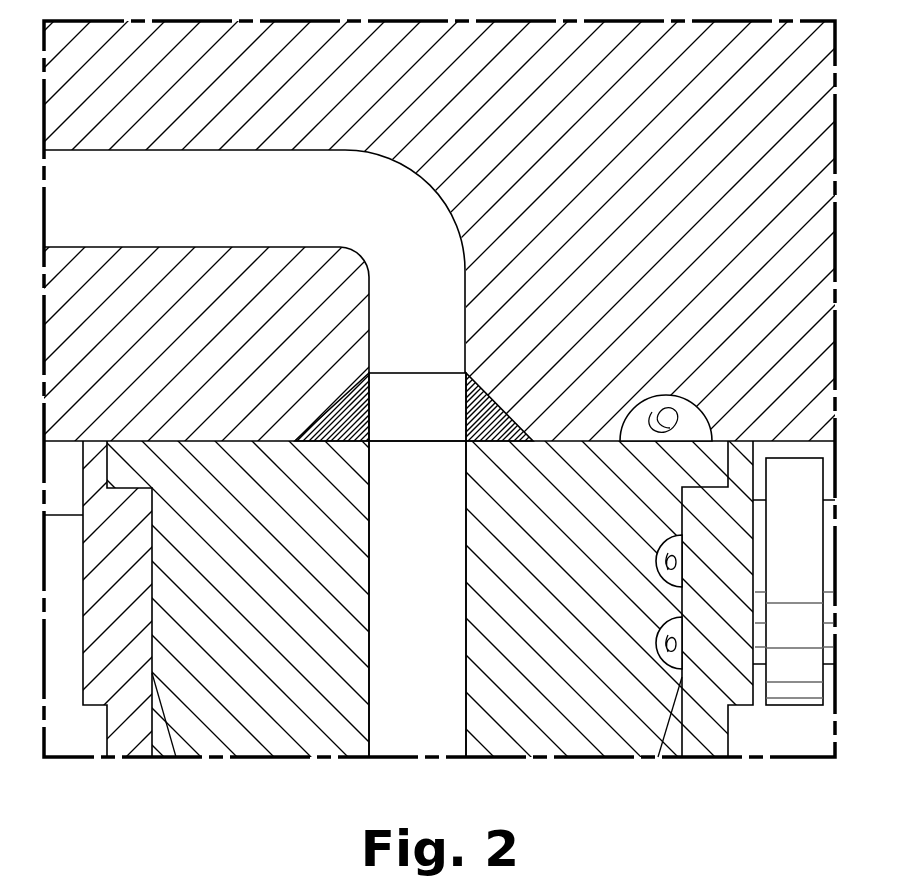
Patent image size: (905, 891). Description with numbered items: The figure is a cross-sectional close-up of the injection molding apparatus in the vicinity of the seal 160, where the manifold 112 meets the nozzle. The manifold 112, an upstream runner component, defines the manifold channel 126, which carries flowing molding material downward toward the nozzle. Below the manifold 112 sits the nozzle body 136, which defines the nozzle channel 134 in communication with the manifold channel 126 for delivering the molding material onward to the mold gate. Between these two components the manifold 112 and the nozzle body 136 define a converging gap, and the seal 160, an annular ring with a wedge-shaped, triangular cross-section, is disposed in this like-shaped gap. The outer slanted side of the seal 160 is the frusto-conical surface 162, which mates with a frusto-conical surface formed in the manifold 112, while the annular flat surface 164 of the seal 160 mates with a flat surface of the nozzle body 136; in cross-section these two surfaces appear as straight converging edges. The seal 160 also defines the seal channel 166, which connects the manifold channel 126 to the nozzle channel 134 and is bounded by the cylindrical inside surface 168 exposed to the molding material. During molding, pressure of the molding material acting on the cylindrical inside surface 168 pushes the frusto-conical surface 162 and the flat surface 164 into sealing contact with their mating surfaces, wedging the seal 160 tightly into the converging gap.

The manifold 112 is at (603, 155).
The manifold channel 126 is at (353, 228).
The nozzle channel 134 is at (391, 608).
The nozzle body 136 is at (538, 646).
The seal 160 is at (421, 382).
The frusto-conical surface 162 is at (335, 415).
The flat surface 164 is at (349, 443).
The seal channel 166 is at (390, 423).
The cylindrical inside surface 168 is at (467, 387).